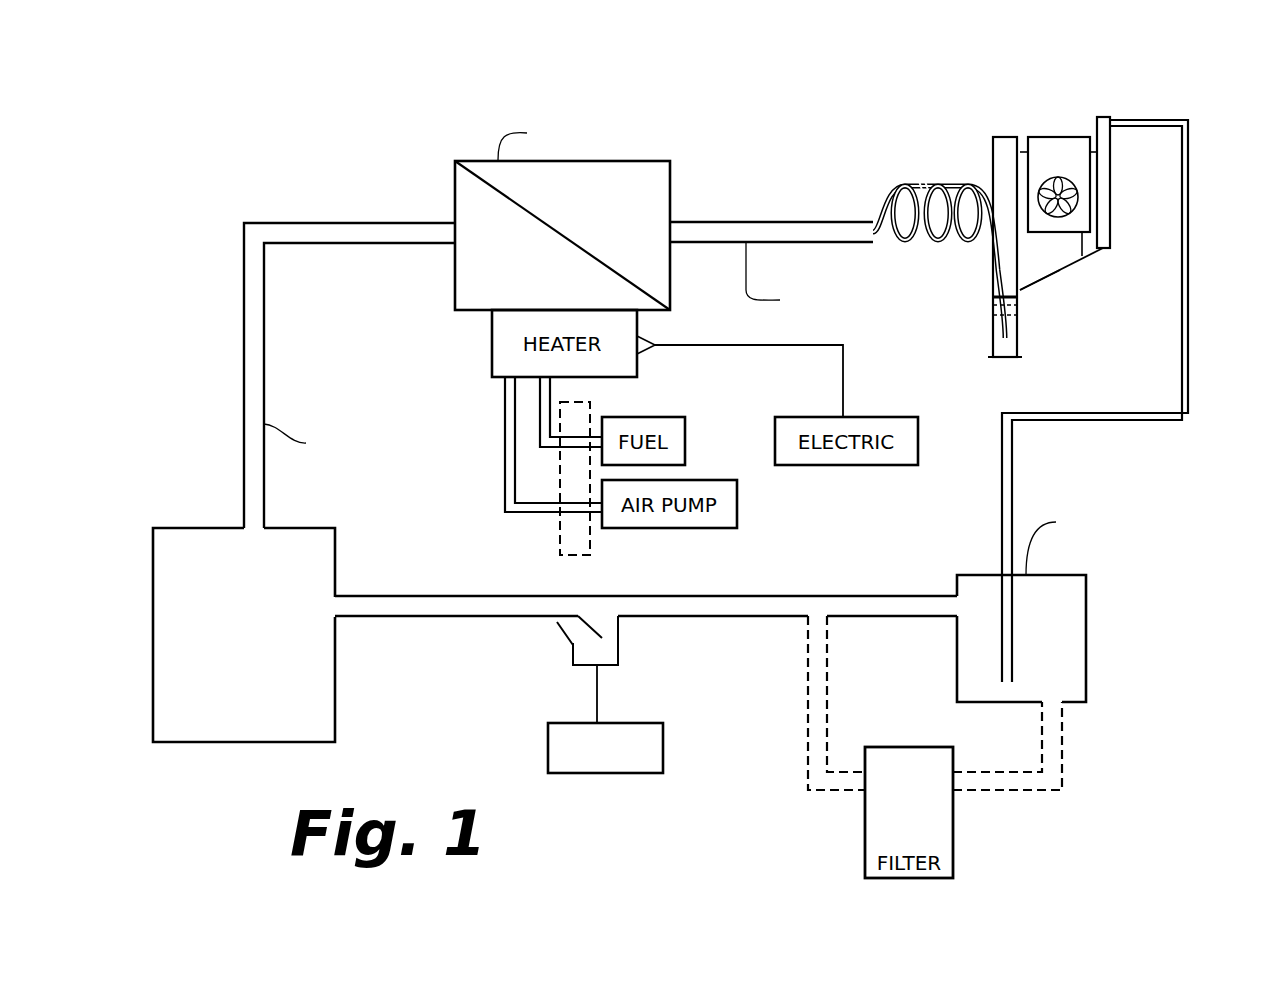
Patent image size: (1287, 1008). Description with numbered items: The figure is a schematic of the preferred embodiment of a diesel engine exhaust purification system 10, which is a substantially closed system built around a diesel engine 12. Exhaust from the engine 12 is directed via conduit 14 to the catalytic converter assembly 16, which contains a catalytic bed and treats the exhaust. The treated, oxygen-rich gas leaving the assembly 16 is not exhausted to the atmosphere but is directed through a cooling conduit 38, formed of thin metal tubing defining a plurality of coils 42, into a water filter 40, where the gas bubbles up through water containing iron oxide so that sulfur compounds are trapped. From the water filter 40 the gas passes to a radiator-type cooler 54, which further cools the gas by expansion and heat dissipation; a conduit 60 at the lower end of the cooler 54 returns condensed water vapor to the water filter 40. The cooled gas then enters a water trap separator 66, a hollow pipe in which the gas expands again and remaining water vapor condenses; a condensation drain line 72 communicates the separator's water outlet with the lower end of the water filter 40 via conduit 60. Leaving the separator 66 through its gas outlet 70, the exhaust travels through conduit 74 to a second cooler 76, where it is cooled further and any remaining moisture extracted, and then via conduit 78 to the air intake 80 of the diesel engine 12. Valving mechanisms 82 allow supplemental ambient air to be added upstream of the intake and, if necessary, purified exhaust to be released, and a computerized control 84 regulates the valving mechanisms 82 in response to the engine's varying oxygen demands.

The exhaust purification system 10 is at (692, 162).
The diesel engine 12 is at (335, 712).
The conduit 14 is at (264, 316).
The catalytic converter assembly 16 is at (484, 161).
The cooling conduit 38 is at (782, 222).
The water filter 40 is at (1001, 137).
The coils 42 is at (938, 184).
The cooler 54 is at (1056, 137).
The conduit 60 is at (1050, 275).
The water trap separator 66 is at (1110, 205).
The gas outlet 70 is at (1116, 120).
The condensation drain line 72 is at (1103, 250).
The conduit 74 is at (1188, 352).
The second cooler 76 is at (1086, 634).
The conduit 78 is at (590, 596).
The air intake 80 is at (340, 618).
The valving mechanisms 82 is at (618, 650).
The computerized control 84 is at (663, 745).